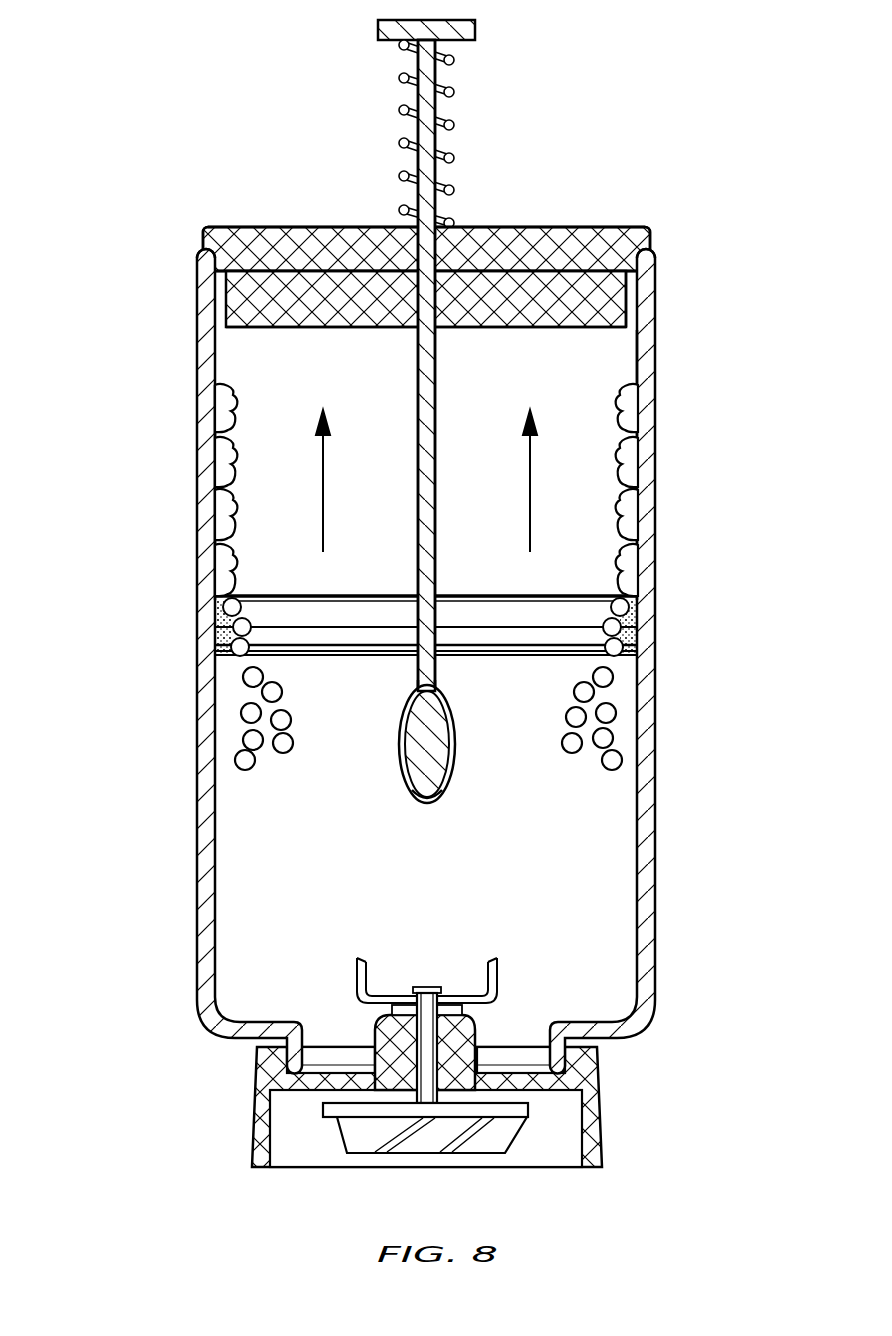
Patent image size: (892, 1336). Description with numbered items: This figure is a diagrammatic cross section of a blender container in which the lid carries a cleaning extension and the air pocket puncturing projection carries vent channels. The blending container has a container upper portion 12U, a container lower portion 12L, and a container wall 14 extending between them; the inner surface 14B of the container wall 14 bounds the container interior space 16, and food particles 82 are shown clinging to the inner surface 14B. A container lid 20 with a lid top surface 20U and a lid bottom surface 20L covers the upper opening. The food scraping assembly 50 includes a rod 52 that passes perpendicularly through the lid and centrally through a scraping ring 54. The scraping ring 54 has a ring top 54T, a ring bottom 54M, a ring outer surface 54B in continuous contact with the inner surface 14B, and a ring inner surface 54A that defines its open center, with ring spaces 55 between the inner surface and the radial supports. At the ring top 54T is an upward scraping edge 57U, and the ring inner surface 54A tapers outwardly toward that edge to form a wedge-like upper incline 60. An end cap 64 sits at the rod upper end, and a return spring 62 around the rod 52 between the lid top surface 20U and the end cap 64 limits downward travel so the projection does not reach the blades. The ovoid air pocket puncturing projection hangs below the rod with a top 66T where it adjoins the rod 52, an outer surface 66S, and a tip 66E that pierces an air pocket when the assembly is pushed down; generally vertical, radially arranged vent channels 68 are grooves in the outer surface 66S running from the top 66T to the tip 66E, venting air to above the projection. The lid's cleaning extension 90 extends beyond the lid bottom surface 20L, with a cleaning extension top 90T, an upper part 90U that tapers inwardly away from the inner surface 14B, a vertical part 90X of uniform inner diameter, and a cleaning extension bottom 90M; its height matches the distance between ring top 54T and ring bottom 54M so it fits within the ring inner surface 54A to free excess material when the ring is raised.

The container lower portion 12L is at (625, 1040).
The container upper portion 12U is at (656, 250).
The container wall 14 is at (657, 396).
The inner surface 14B is at (638, 362).
The container interior space 16 is at (243, 863).
The container lid 20 is at (645, 228).
The lid top surface 20U is at (479, 228).
The lid bottom surface 20L is at (632, 293).
The food scraping assembly 50 is at (437, 482).
The rod 52 is at (436, 543).
The scraping ring 54 is at (640, 598).
The ring top 54T is at (383, 595).
The ring bottom 54M is at (370, 655).
The ring outer surface 54B is at (645, 645).
The ring inner surface 54A is at (645, 655).
The ring spaces 55 is at (298, 637).
The upward scraping edge 57U is at (645, 600).
The upper incline 60 is at (640, 628).
The return spring 62 is at (449, 158).
The end cap 64 is at (476, 26).
The top 66T is at (440, 683).
The outer surface 66S is at (455, 770).
The tip 66E is at (427, 800).
The vent channels 68 is at (450, 740).
The food particles 82 is at (215, 555).
The cleaning extension 90 is at (275, 332).
The cleaning extension top 90T is at (322, 268).
The upper part 90U is at (632, 280).
The vertical part 90X is at (627, 320).
The cleaning extension bottom 90M is at (162, 492).